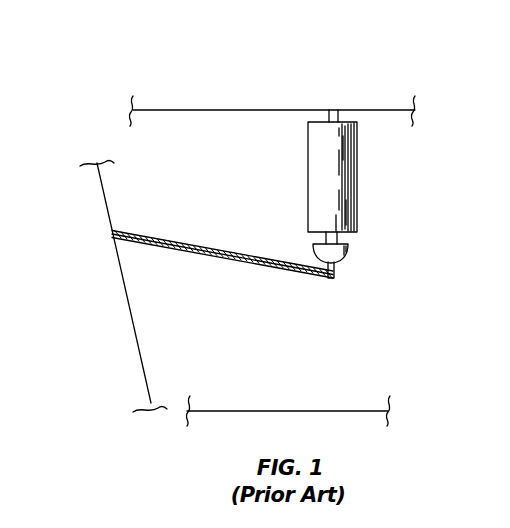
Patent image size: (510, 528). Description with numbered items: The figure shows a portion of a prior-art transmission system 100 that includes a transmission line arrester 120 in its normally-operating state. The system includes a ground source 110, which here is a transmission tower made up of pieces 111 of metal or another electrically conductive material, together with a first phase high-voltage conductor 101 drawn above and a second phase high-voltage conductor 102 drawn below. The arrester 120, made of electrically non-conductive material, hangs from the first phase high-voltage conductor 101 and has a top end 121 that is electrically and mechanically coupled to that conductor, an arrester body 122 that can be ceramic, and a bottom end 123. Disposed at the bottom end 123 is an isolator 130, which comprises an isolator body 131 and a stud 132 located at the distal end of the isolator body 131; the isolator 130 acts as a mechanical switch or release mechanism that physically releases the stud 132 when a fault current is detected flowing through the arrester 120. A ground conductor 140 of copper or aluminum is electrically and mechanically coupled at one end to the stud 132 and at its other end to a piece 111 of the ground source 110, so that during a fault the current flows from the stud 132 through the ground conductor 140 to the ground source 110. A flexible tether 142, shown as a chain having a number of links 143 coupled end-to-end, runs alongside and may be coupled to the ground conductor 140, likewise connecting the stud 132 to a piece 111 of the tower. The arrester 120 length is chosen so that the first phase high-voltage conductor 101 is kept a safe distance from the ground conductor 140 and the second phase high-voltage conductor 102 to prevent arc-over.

The transmission system 100 is at (98, 62).
The first phase high-voltage conductor 101 is at (200, 110).
The second phase high-voltage conductor 102 is at (242, 411).
The ground source 110 is at (107, 286).
The pieces 111 is at (127, 305).
The arrester 120 is at (406, 203).
The top end 121 is at (338, 117).
The arrester body 122 is at (308, 152).
The bottom end 123 is at (326, 240).
The isolator 130 is at (378, 262).
The isolator body 131 is at (346, 251).
The stud 132 is at (336, 270).
The ground conductor 140 is at (170, 232).
The tether 142 is at (185, 258).
The links 143 is at (268, 265).